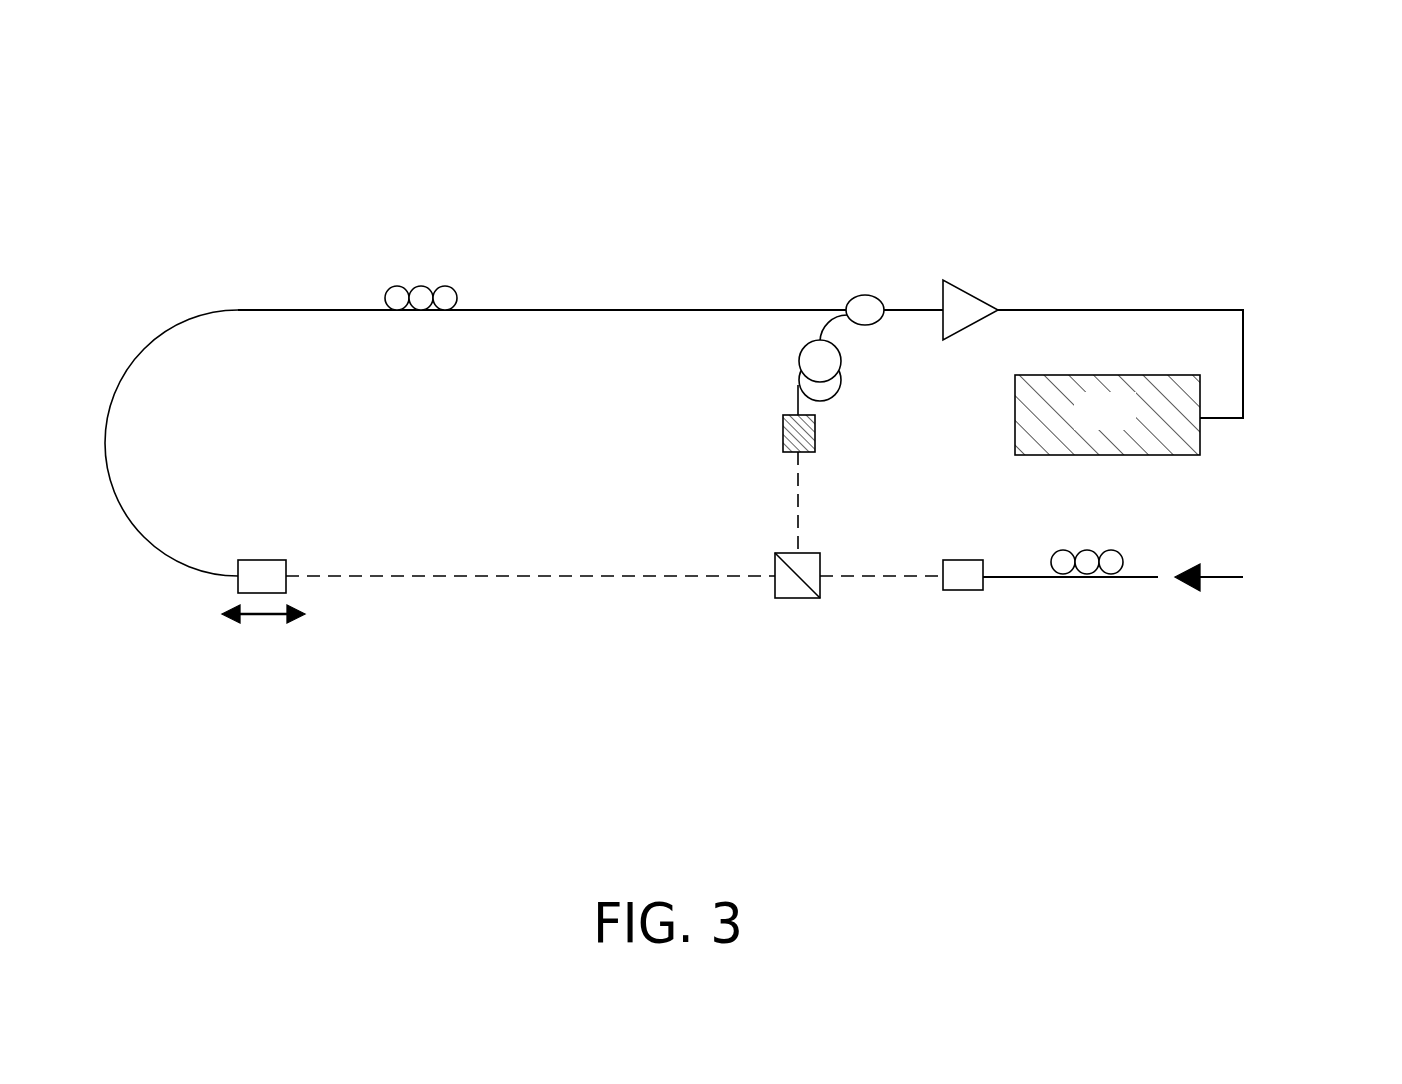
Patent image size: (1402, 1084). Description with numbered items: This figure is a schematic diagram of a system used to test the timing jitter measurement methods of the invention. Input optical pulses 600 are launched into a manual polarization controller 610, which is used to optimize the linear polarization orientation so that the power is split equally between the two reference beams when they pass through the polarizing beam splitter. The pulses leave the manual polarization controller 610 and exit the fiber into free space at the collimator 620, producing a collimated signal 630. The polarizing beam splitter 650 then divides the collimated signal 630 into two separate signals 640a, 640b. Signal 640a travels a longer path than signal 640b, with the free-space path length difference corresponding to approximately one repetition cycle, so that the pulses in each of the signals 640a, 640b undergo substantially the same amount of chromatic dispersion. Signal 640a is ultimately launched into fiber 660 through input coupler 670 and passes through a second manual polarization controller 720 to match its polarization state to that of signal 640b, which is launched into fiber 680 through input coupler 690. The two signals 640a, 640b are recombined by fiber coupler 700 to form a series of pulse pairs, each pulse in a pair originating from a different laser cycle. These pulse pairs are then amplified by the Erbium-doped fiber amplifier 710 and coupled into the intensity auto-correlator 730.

The input optical pulses 600 is at (1220, 577).
The manual polarization controller 610 is at (1085, 575).
The collimator 620 is at (963, 590).
The collimated signal 630 is at (890, 578).
The signal 640a is at (523, 576).
The signal 640b is at (798, 505).
The polarizing beam splitter 650 is at (775, 590).
The fiber 660 is at (140, 354).
The input coupler 670 is at (238, 588).
The fiber 680 is at (842, 366).
The input coupler 690 is at (783, 437).
The fiber coupler 700 is at (862, 295).
The Erbium-doped fiber amplifier 710 is at (972, 290).
The second manual polarization controller 720 is at (457, 298).
The intensity auto-correlator 730 is at (1200, 443).